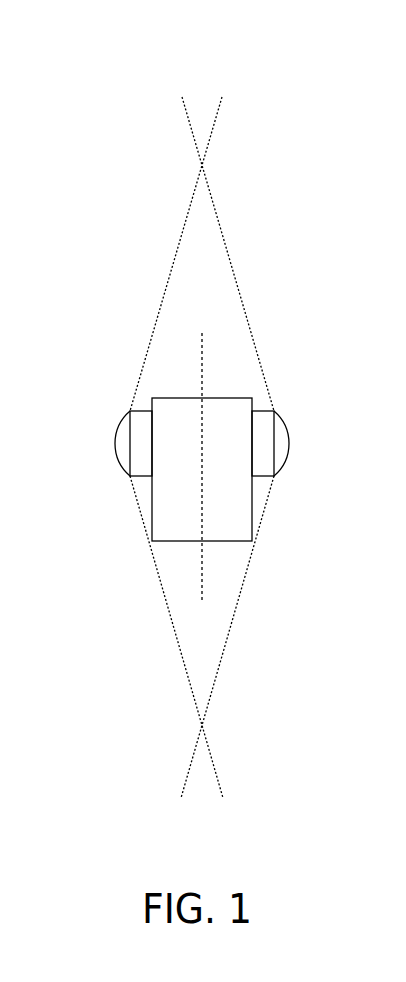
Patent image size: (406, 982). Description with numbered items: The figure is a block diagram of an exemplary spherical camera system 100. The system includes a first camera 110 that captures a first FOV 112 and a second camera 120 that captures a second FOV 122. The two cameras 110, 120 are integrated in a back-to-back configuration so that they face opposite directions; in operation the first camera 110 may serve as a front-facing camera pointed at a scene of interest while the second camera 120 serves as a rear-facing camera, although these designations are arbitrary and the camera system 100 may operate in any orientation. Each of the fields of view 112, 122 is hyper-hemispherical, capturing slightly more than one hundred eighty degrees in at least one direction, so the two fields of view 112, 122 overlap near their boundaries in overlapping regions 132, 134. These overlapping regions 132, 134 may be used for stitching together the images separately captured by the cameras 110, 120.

The spherical camera system 100 is at (122, 373).
The first camera 110 is at (170, 454).
The second camera 120 is at (213, 454).
The first FOV 112 is at (49, 474).
The second FOV 122 is at (339, 474).
The overlapping region 132 is at (191, 858).
The overlapping region 134 is at (191, 90).